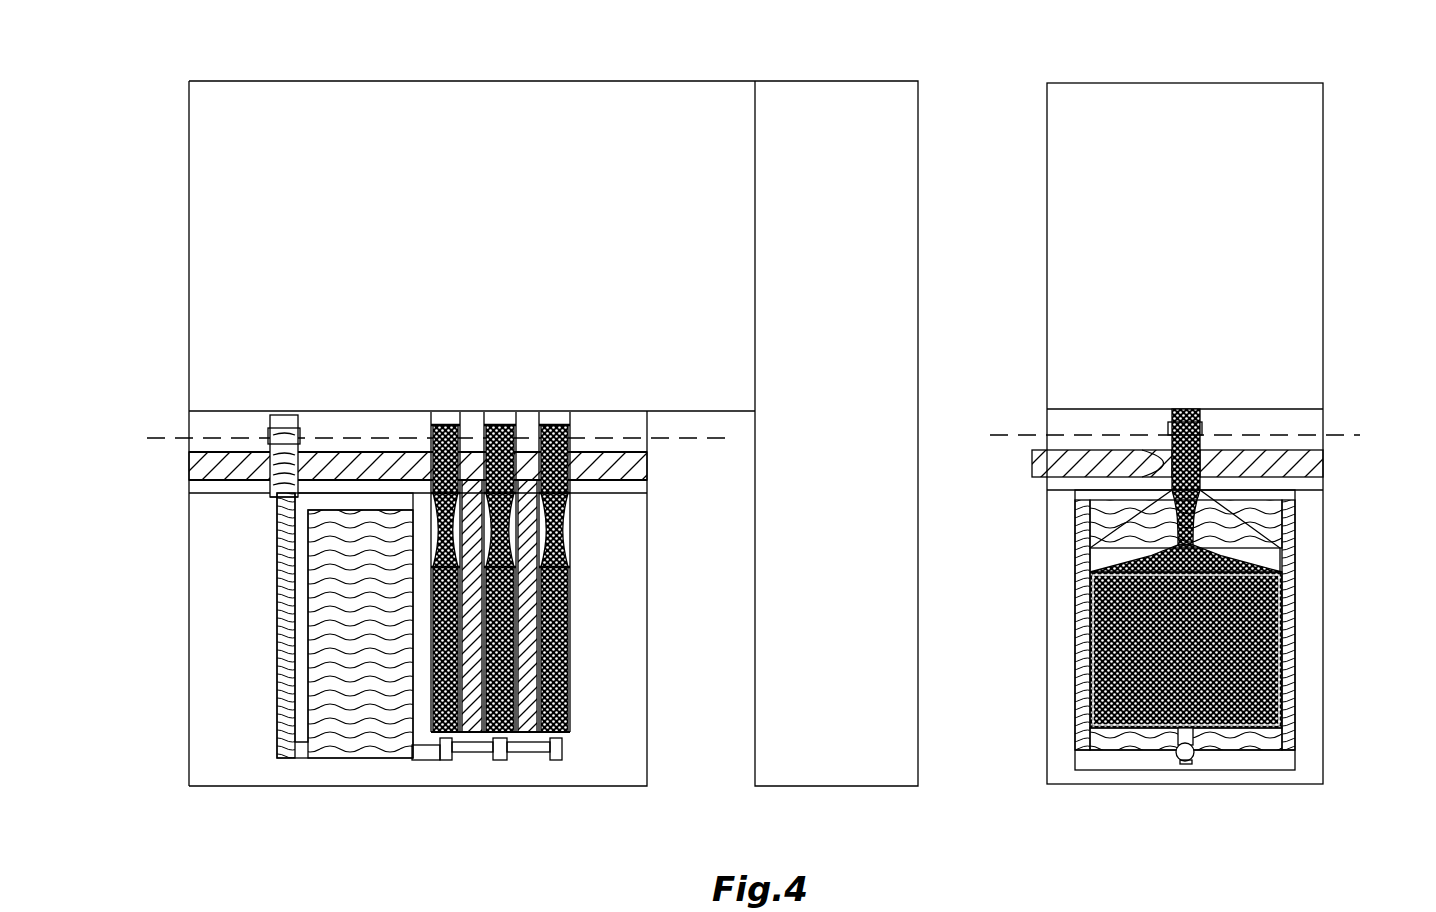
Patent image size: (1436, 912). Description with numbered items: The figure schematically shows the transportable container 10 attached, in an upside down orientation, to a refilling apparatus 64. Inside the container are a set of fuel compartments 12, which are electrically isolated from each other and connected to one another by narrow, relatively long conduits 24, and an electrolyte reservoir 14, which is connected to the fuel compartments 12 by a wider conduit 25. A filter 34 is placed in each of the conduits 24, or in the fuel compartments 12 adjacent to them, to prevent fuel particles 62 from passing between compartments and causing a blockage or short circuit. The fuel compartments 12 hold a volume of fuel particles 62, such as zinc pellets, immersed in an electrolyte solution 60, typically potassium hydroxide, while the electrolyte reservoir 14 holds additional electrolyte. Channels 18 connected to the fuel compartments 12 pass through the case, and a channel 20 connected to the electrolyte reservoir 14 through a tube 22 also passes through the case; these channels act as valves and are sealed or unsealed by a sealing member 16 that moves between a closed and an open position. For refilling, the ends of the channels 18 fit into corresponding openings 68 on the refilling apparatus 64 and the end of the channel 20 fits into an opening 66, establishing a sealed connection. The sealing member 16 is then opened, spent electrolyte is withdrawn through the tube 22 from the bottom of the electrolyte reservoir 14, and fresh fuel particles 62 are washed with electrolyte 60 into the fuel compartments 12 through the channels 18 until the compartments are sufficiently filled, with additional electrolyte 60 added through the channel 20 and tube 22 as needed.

The transportable container 10 is at (656, 578).
The fuel compartments 12 is at (437, 612).
The electrolyte reservoir 14 is at (310, 622).
The sealing member 16 is at (222, 452).
The channels 18 is at (572, 463).
The channel 20 is at (277, 487).
The tube 22 is at (277, 553).
The conduits 24 is at (472, 752).
The wider conduit 25 is at (422, 762).
The filter 34 is at (444, 760).
The electrolyte solution 60 is at (375, 750).
The fuel particles 62 is at (568, 512).
The refilling apparatus 64 is at (300, 67).
The opening 66 is at (287, 432).
The openings 68 is at (548, 425).